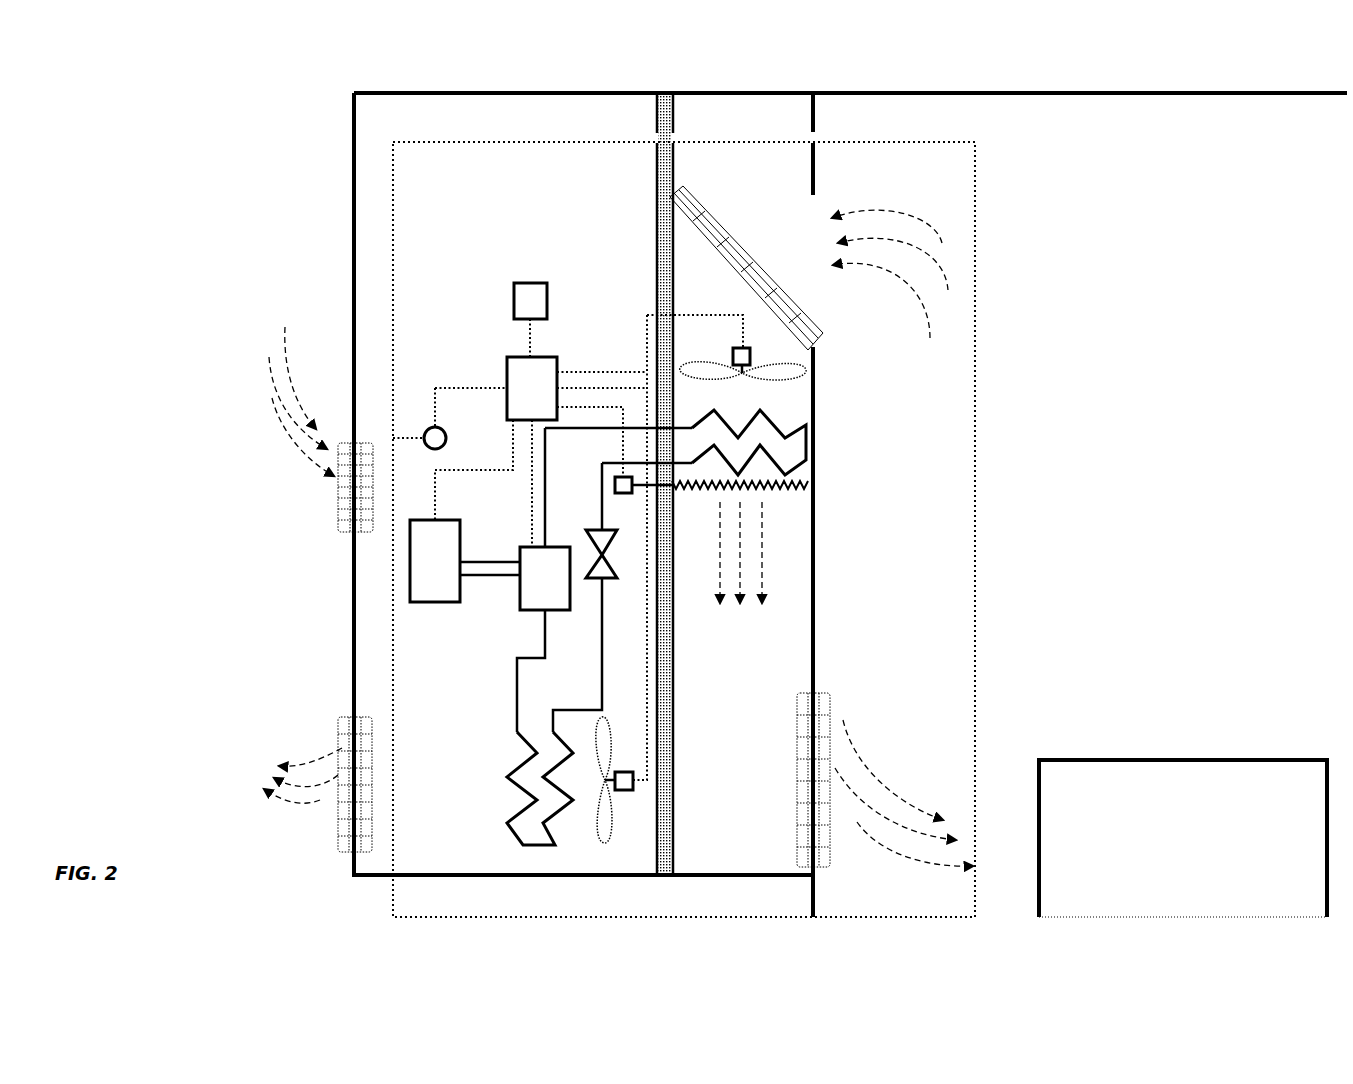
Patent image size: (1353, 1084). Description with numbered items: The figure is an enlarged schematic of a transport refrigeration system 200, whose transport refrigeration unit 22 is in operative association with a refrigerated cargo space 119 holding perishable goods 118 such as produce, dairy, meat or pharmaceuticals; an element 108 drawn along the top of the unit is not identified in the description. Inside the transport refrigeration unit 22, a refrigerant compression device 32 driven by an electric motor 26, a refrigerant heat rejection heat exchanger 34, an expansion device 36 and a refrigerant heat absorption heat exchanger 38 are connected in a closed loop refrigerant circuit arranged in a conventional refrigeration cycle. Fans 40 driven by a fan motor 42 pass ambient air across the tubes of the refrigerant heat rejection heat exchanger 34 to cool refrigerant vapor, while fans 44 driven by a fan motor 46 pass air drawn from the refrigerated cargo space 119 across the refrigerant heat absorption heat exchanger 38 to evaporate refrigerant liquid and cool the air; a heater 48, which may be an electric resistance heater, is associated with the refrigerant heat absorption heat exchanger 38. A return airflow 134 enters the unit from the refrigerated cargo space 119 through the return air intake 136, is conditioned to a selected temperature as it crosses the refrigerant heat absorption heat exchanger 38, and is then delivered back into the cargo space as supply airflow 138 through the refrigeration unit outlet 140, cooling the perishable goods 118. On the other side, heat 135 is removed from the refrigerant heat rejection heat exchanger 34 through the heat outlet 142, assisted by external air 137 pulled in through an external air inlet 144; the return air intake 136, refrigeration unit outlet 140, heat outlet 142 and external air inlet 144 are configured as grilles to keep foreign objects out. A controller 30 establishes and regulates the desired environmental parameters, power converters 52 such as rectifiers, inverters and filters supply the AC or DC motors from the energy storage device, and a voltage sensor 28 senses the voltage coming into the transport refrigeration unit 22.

The transport refrigeration system 200 is at (316, 147).
The transport refrigeration unit 22 is at (456, 93).
The top wall 108 is at (1102, 93).
The perishable goods 118 is at (1108, 762).
The refrigerated cargo space 119 is at (1219, 324).
The return air intake 136 is at (742, 245).
The return airflow 134 is at (927, 327).
The external air 137 is at (275, 398).
The external air inlet 144 is at (338, 530).
The heat outlet 142 is at (338, 727).
The heat 135 is at (275, 795).
The refrigeration unit outlet 140 is at (797, 702).
The supply airflow 138 is at (867, 760).
The controller 30 is at (547, 318).
The power converters 52 is at (507, 372).
The voltage sensor 28 is at (447, 445).
The electric motor 26 is at (410, 600).
The refrigerant compression device 32 is at (520, 600).
The expansion device 36 is at (617, 568).
The refrigerant heat rejection heat exchanger 34 is at (545, 845).
The fans 40 is at (605, 835).
The fan motor 42 is at (640, 785).
The fans 44 is at (808, 378).
The fan motor 46 is at (733, 357).
The refrigerant heat absorption heat exchanger 38 is at (813, 430).
The heater 48 is at (813, 483).